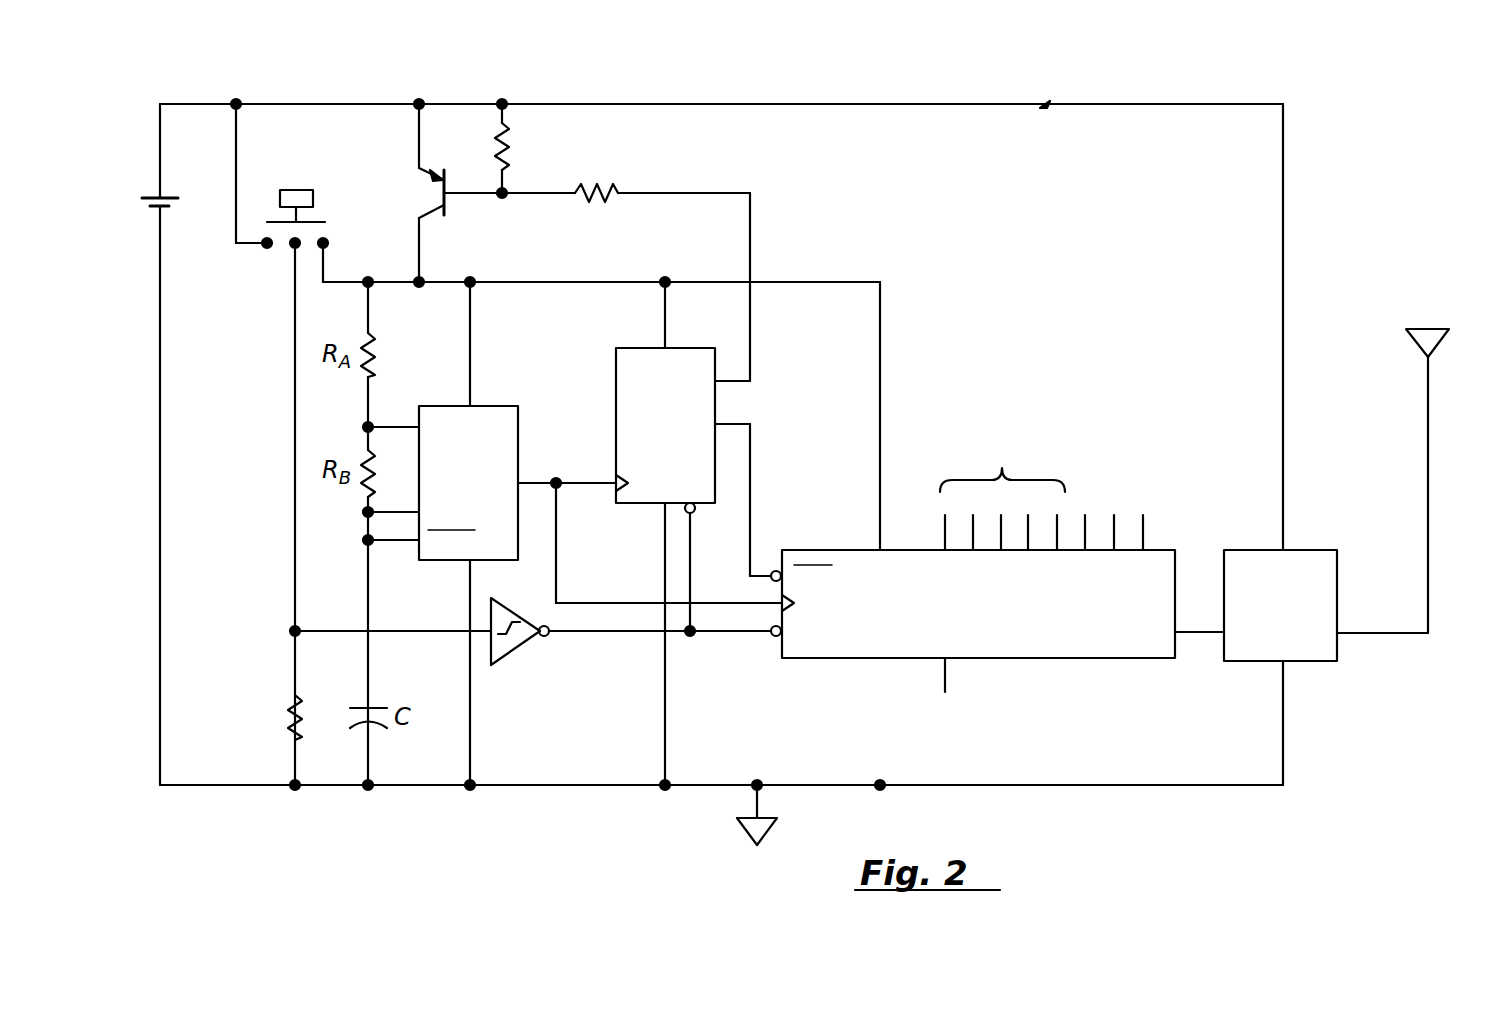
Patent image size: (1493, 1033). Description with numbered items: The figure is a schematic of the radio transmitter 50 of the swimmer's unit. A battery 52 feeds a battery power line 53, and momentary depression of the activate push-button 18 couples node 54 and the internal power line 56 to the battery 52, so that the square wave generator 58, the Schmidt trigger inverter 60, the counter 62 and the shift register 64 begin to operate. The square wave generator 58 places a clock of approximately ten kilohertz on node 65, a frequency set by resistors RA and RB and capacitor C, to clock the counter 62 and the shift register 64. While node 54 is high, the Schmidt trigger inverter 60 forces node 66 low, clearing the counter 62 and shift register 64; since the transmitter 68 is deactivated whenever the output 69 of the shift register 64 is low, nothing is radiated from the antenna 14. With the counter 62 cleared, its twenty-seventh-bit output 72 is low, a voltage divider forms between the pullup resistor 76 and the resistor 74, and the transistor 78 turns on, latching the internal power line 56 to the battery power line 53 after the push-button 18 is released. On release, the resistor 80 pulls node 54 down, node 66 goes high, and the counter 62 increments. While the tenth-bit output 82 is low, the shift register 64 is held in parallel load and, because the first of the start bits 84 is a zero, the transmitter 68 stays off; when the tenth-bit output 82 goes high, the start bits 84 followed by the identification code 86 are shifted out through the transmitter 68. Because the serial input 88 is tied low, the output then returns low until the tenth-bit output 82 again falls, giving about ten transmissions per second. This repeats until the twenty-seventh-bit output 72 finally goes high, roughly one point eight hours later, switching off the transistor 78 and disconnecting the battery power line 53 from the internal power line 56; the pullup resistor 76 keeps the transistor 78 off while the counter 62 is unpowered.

The antenna 14 is at (1432, 610).
The activate push-button 18 is at (300, 189).
The radio transmitter 50 is at (985, 92).
The battery 52 is at (152, 193).
The battery power line 53 is at (190, 102).
The node 54 is at (292, 627).
The internal power line 56 is at (800, 281).
The square wave generator 58 is at (448, 562).
The Schmidt trigger inverter 60 is at (518, 655).
The counter 62 is at (626, 498).
The shift register 64 is at (1040, 665).
The node 65 is at (560, 488).
The node 66 is at (692, 640).
The transmitter 68 is at (1305, 650).
The output 69 is at (1193, 640).
The bit-27 output 72 is at (700, 190).
The resistor 74 is at (611, 188).
The pullup resistor 76 is at (497, 130).
The transistor 78 is at (433, 194).
The resistor 80 is at (288, 698).
The bit-10 output 82 is at (752, 472).
The start bits 84 is at (1118, 475).
The identification code 86 is at (1000, 400).
The serial input 88 is at (962, 722).